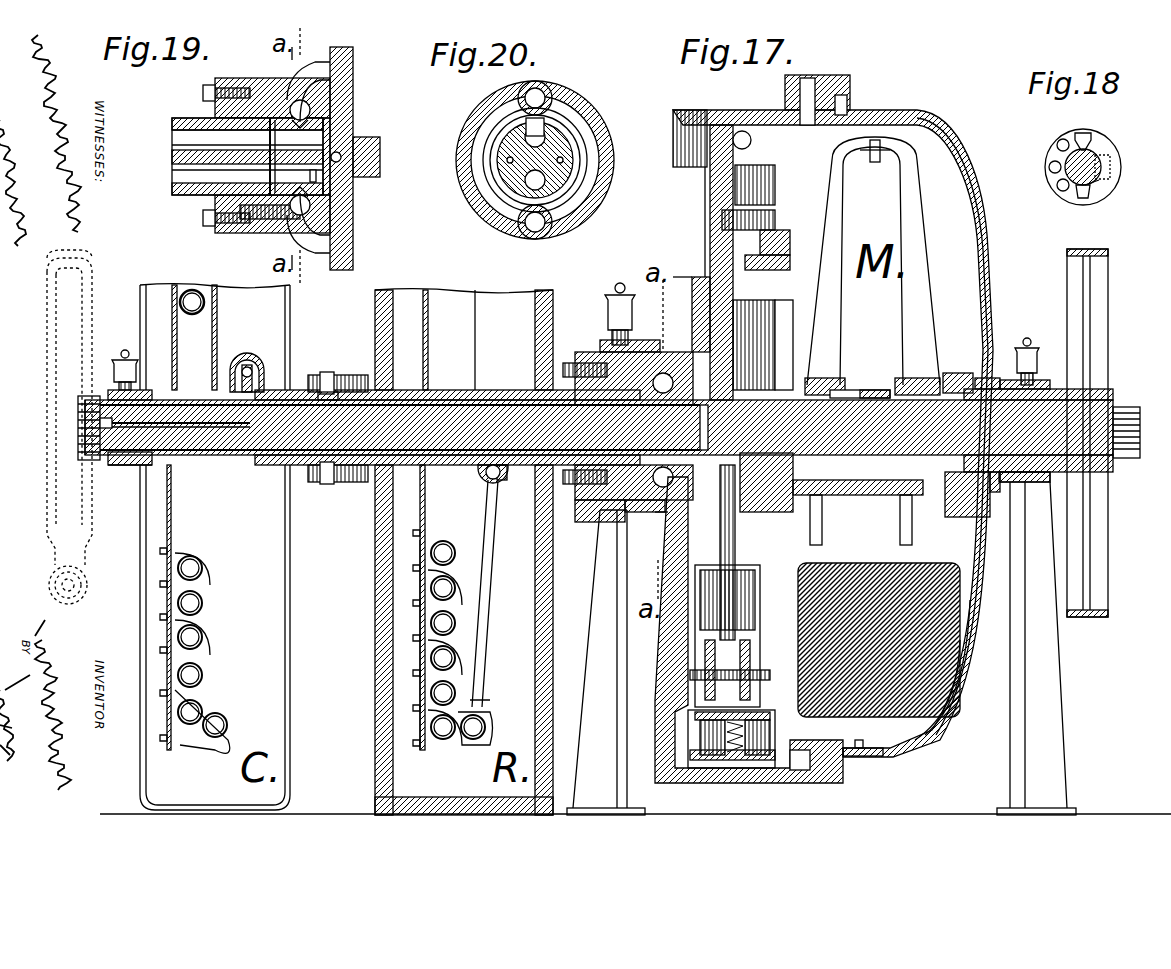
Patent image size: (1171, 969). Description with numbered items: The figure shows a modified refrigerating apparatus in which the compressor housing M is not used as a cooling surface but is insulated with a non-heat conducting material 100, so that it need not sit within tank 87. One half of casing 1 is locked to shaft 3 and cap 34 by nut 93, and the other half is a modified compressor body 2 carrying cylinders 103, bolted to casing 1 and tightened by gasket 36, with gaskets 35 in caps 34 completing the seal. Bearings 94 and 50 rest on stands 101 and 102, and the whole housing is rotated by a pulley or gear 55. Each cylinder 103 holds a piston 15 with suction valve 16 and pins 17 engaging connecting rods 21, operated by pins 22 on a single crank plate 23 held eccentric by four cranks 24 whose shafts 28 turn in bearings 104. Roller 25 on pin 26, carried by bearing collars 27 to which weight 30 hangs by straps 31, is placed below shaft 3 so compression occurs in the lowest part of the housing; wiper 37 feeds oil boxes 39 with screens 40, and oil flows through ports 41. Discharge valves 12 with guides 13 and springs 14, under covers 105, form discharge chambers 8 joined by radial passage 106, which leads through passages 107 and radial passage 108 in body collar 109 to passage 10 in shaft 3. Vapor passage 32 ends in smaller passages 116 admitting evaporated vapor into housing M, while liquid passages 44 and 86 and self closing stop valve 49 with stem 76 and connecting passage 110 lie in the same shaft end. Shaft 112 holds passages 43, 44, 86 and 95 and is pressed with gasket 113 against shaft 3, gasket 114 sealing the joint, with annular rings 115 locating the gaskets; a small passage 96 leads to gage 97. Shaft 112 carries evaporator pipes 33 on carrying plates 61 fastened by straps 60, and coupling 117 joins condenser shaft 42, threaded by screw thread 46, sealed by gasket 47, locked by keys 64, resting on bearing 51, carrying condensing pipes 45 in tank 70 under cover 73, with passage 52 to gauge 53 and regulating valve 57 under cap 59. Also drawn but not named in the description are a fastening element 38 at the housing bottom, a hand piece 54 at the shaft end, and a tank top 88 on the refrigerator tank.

In FIG. 17, the casing 1 is at (985, 195).
In FIG. 19, the compressor body 2 is at (340, 210).
In FIG. 17, the compressor body 2 is at (722, 187).
In FIG. 19, the shaft 3 is at (375, 157).
In FIG. 20, the shaft 3 is at (560, 143).
In FIG. 18, the shaft 3 is at (1095, 160).
In FIG. 17, the shaft 3 is at (790, 390).
In FIG. 17, the discharge chambers 8 is at (770, 710).
In FIG. 19, the passage 10 is at (340, 130).
In FIG. 20, the passage 10 is at (540, 138).
In FIG. 18, the passage 10 is at (1100, 165).
In FIG. 17, the passage 10 is at (599, 418).
In FIG. 17, the discharge valves 12 is at (720, 762).
In FIG. 17, the guides 13 is at (735, 760).
In FIG. 17, the springs 14 is at (715, 765).
In FIG. 17, the pistons 15 is at (700, 760).
In FIG. 17, the suction valves 16 is at (695, 760).
In FIG. 17, the pins 17 is at (690, 675).
In FIG. 17, the connecting rods 21 is at (705, 612).
In FIG. 17, the pins 22 is at (760, 540).
In FIG. 17, the crank plate 23 is at (800, 300).
In FIG. 17, the cranks 24 is at (770, 212).
In FIG. 17, the roller 25 is at (745, 468).
In FIG. 17, the pin 26 is at (745, 490).
In FIG. 17, the bearing collars 27 is at (920, 385).
In FIG. 17, the shafts 28 is at (770, 230).
In FIG. 17, the weight 30 is at (960, 680).
In FIG. 17, the straps 31 is at (950, 710).
In FIG. 19, the vapor passage 32 is at (350, 200).
In FIG. 20, the vapor passage 32 is at (545, 183).
In FIG. 18, the vapor passage 32 is at (1068, 170).
In FIG. 17, the vapor passage 32 is at (847, 230).
In FIG. 17, the pipes 33 is at (425, 600).
In FIG. 17, the caps 34 is at (1005, 500).
In FIG. 17, the gaskets 35 is at (1000, 380).
In FIG. 17, the gasket 36 is at (838, 102).
In FIG. 17, the wiper 37 is at (880, 150).
In FIG. 17, the bolt 38 is at (858, 755).
In FIG. 17, the oil boxes 39 is at (815, 385).
In FIG. 17, the screens 40 is at (830, 392).
In FIG. 17, the ports 41 is at (935, 390).
In FIG. 17, the condenser shaft 42 is at (250, 470).
In FIG. 19, the passage 43 is at (195, 140).
In FIG. 17, the passage 43 is at (190, 470).
In FIG. 20, the passage 44 is at (505, 160).
In FIG. 18, the passage 44 is at (1088, 140).
In FIG. 17, the passage 44 is at (178, 462).
In FIG. 17, the pipes 45 is at (188, 305).
In FIG. 17, the screw thread 46 is at (1060, 390).
In FIG. 17, the gasket 47 is at (1020, 490).
In FIG. 17, the self closing stop valve 49 is at (630, 510).
In FIG. 19, the bearing 50 is at (240, 222).
In FIG. 17, the bearing 50 is at (595, 505).
In FIG. 17, the bearing 51 is at (115, 462).
In FIG. 17, the passage 52 is at (145, 465).
In FIG. 17, the gauge 53 is at (105, 440).
In FIG. 17, the hand wheel 54 is at (82, 425).
In FIG. 17, the pulley or gear 55 is at (82, 400).
In FIG. 17, the regulating and stop valve 57 is at (265, 370).
In FIG. 17, the cap 59 is at (248, 350).
In FIG. 17, the straps 60 is at (195, 625).
In FIG. 17, the carrying plates 61 is at (168, 605).
In FIG. 17, the keys 64 is at (1038, 360).
In FIG. 17, the tank 70 is at (292, 668).
In FIG. 17, the cover 73 is at (292, 322).
In FIG. 17, the stem 76 is at (660, 545).
In FIG. 20, the passage 86 is at (565, 160).
In FIG. 18, the passage 86 is at (1078, 195).
In FIG. 17, the passage 86 is at (545, 480).
In FIG. 17, the tank 87 is at (375, 540).
In FIG. 17, the tank top 88 is at (385, 320).
In FIG. 17, the nut 93 is at (1050, 385).
In FIG. 17, the bearing 94 is at (1060, 478).
In FIG. 19, the passage 95 is at (195, 172).
In FIG. 17, the passage 96 is at (875, 398).
In FIG. 17, the gage 97 is at (1135, 430).
In FIG. 17, the non-heat conducting material 100 is at (975, 165).
In FIG. 17, the stand 101 is at (1036, 643).
In FIG. 17, the stand 102 is at (606, 662).
In FIG. 17, the cylinders 103 is at (760, 195).
In FIG. 17, the bearings 104 is at (712, 243).
In FIG. 17, the covers 105 is at (705, 112).
In FIG. 17, the radial passage 106 is at (805, 100).
In FIG. 19, the passages 107 is at (322, 84).
In FIG. 20, the passages 107 is at (548, 92).
In FIG. 19, the radial passage 108 is at (330, 95).
In FIG. 20, the radial passage 108 is at (488, 190).
In FIG. 17, the radial passage 108 is at (640, 340).
In FIG. 19, the body collar 109 is at (318, 75).
In FIG. 20, the body collar 109 is at (470, 120).
In FIG. 17, the body collar 109 is at (605, 352).
In FIG. 19, the connecting passage 110 is at (340, 165).
In FIG. 18, the connecting passage 110 is at (1095, 180).
In FIG. 19, the shaft 112 is at (215, 157).
In FIG. 17, the shaft 112 is at (585, 380).
In FIG. 19, the gasket 113 is at (330, 112).
In FIG. 17, the gasket 113 is at (665, 355).
In FIG. 19, the gasket 114 is at (265, 165).
In FIG. 17, the gasket 114 is at (590, 395).
In FIG. 19, the annular rings 115 is at (215, 100).
In FIG. 19, the passages 116 is at (320, 175).
In FIG. 18, the passages 116 is at (1065, 140).
In FIG. 17, the coupling 117 is at (335, 485).